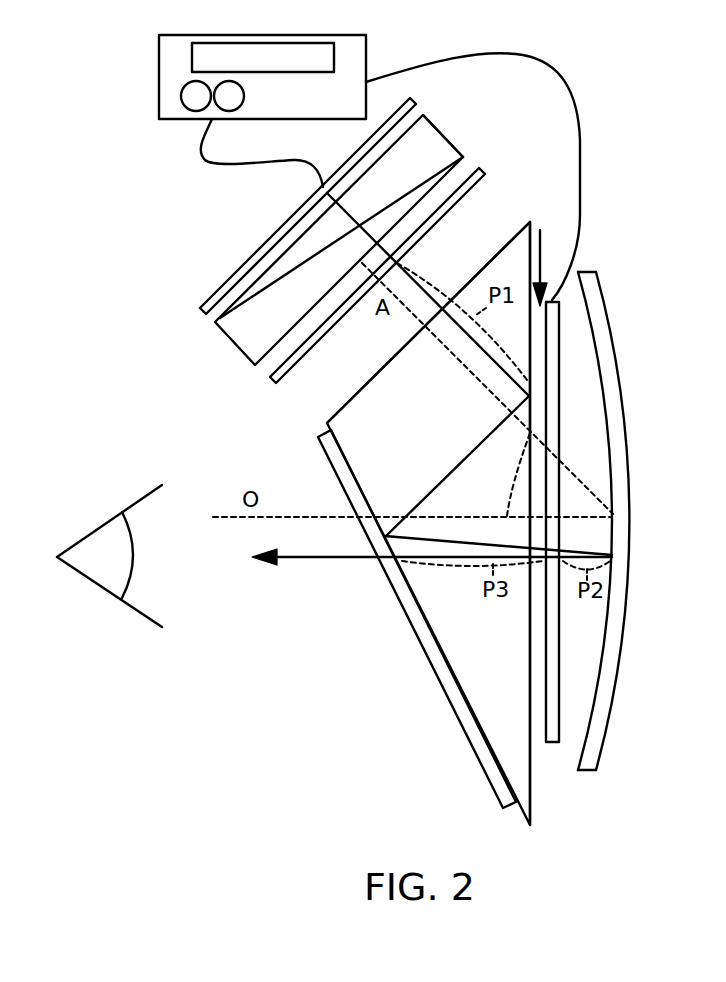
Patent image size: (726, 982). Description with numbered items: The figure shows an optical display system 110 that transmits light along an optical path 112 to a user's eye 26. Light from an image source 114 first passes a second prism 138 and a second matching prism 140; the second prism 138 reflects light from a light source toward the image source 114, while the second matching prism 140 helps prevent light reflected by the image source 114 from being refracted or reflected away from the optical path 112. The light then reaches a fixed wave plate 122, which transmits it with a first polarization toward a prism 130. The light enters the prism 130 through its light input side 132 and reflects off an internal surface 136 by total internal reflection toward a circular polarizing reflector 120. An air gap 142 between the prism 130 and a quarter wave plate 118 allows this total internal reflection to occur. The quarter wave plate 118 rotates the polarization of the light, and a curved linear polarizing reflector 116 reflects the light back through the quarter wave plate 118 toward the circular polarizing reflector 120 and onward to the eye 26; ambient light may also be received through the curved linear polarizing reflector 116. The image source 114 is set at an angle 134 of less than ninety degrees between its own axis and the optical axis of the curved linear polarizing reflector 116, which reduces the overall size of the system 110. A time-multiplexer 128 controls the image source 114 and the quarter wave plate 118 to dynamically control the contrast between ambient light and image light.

The user's eye 26 is at (98, 528).
The system 110 is at (641, 92).
The optical path 112 is at (305, 558).
The image source 114 is at (285, 227).
The curved linear polarizing reflector 116 is at (578, 272).
The quarter wave plate 118 is at (559, 357).
The circular polarizing reflector 120 is at (473, 747).
The fixed wave plate 122 is at (480, 168).
The time-multiplexer 128 is at (352, 110).
The prism 130 is at (378, 440).
The light input side 132 is at (362, 389).
The angle 134 is at (508, 485).
The internal surface 136 is at (529, 753).
The second prism 138 is at (448, 135).
The second matching prism 140 is at (228, 337).
The air gap 142 is at (540, 230).